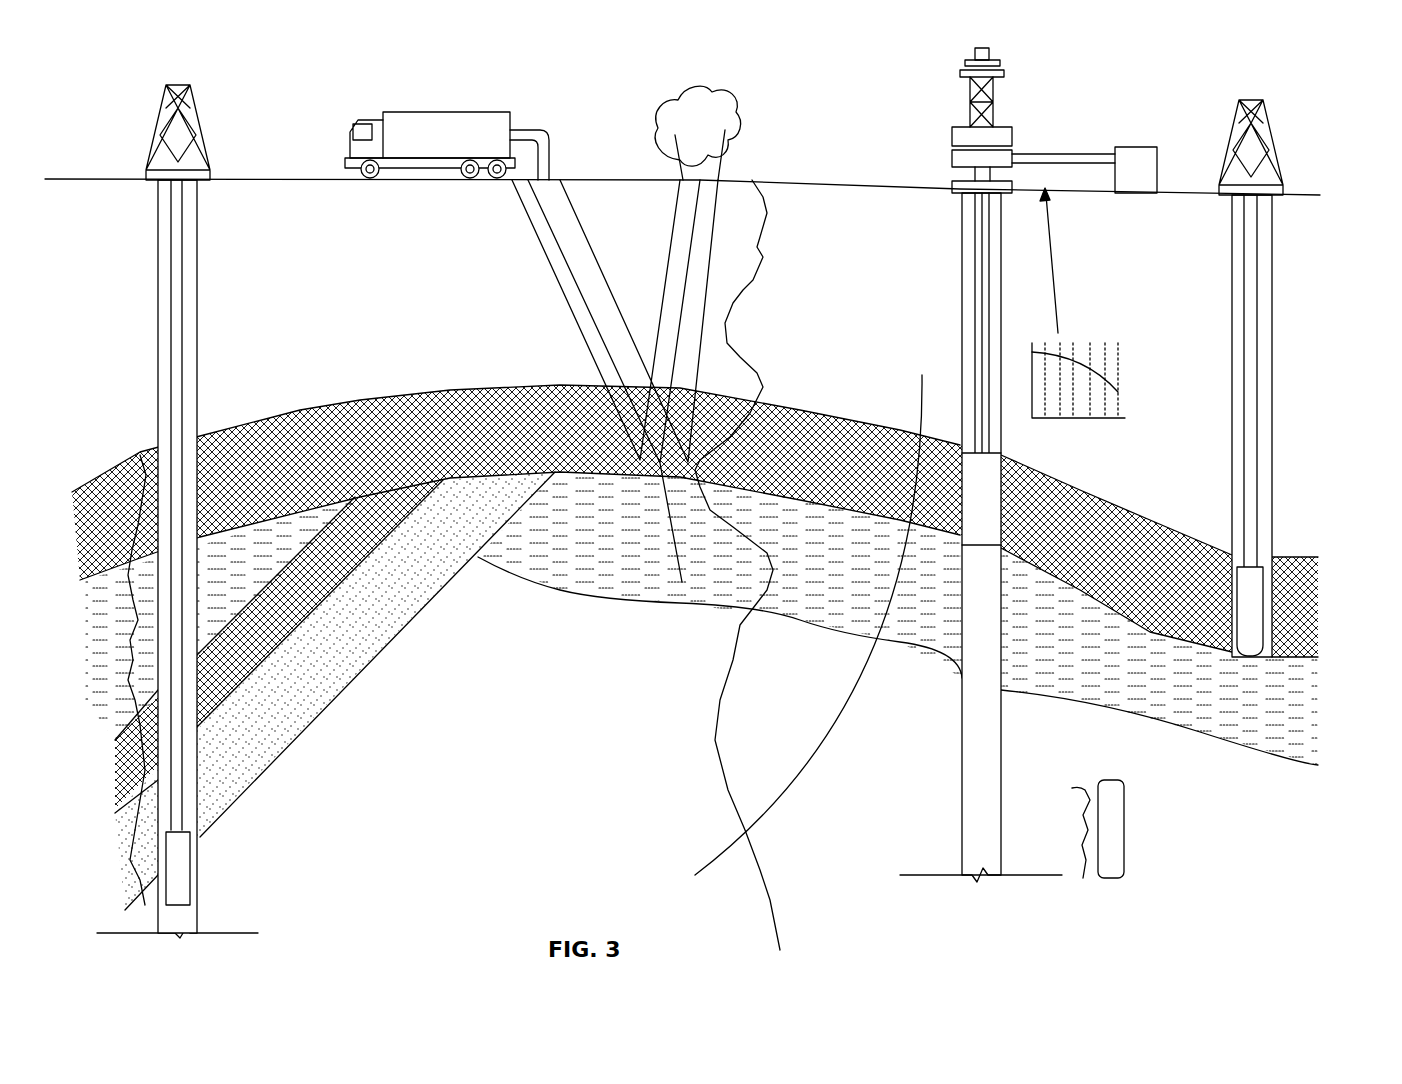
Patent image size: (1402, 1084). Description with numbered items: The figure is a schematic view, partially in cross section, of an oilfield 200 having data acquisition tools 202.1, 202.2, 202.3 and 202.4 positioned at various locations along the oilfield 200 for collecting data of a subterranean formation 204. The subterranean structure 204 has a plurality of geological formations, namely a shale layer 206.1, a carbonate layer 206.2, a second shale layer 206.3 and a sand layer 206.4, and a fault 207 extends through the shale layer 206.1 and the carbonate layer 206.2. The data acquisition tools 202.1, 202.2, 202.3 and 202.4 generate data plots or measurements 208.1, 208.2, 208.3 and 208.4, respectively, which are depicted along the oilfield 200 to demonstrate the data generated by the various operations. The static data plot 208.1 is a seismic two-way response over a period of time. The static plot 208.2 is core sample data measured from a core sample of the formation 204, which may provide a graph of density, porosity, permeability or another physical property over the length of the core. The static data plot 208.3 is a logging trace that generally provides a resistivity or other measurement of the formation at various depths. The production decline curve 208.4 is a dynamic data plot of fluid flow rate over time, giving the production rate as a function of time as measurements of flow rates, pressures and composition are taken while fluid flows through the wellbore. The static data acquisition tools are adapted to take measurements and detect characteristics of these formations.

The oilfield 200 is at (1205, 109).
The data acquisition tool 202.1 is at (418, 112).
The data acquisition tool 202.2 is at (1263, 612).
The data acquisition tool 202.3 is at (190, 870).
The data acquisition tool 202.4 is at (1003, 522).
The subterranean formation 204 is at (536, 694).
The shale layer 206.1 is at (306, 476).
The carbonate layer 206.2 is at (233, 574).
The shale layer 206.3 is at (290, 618).
The sand layer 206.4 is at (341, 658).
The fault 207 is at (922, 378).
The static data plot 208.1 is at (736, 742).
The static plot 208.2 is at (1071, 822).
The static data plot 208.3 is at (125, 642).
The production decline curve 208.4 is at (1080, 418).